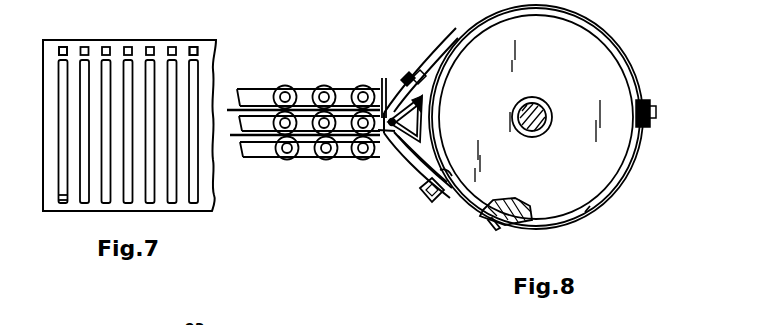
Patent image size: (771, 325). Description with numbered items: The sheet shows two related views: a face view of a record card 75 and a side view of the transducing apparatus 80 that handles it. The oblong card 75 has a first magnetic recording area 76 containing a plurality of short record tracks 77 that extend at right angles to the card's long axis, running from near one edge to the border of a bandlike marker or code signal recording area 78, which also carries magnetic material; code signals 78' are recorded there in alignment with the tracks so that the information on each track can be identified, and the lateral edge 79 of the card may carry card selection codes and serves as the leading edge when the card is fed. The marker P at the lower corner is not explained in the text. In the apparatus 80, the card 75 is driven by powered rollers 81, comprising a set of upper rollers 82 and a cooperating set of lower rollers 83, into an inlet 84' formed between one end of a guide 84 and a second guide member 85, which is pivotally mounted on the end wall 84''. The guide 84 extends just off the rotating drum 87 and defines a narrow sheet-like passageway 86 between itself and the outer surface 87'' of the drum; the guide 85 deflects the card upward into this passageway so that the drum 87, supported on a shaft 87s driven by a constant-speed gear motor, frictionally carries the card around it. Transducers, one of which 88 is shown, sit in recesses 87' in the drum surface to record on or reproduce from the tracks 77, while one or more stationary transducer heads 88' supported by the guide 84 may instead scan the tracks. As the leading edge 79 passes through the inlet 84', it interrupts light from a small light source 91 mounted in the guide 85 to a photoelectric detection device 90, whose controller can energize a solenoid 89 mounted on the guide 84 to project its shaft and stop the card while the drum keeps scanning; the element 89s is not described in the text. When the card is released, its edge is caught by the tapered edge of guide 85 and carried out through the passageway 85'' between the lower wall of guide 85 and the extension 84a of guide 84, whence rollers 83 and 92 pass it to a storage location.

In FIG. 7, the first magnetic recording area 76 is at (50, 95).
In FIG. 7, the marker or code signal recording area 78 is at (129, 108).
In FIG. 7, the code signals 78' is at (77, 32).
In FIG. 7, the edge of the card 79 is at (173, 39).
In FIG. 7, the pin P is at (62, 191).
In FIG. 7, the record tracks 77 is at (61, 194).
In FIG. 7, the record card 75 is at (210, 212).
In FIG. 8, the record card 75 is at (238, 118).
In FIG. 8, the powered rollers 81 is at (287, 87).
In FIG. 8, the upper rollers 82 is at (280, 132).
In FIG. 8, the lower rollers 83 is at (283, 132).
In FIG. 8, the powered rollers 92 is at (326, 153).
In FIG. 8, the guide 84 is at (423, 106).
In FIG. 8, the inlet 84' is at (369, 112).
In FIG. 8, the end wall 84'' is at (425, 63).
In FIG. 8, the extension of the guide 84a is at (394, 145).
In FIG. 8, the second guide member 85 is at (423, 119).
In FIG. 8, the passageway 85'' is at (372, 155).
In FIG. 8, the photoelectrical detection device 90 is at (406, 76).
In FIG. 8, the light source 91 is at (422, 103).
In FIG. 8, the rotating drum 87 is at (538, 117).
In FIG. 8, the shaft 87s is at (538, 130).
In FIG. 8, the recesses 87' is at (506, 225).
In FIG. 8, the outer surface of the drum 87'' is at (604, 225).
In FIG. 8, the passageway 86 is at (593, 27).
In FIG. 8, the apparatus 80 is at (635, 27).
In FIG. 8, the transducer 88 is at (478, 234).
In FIG. 8, the stationary transducer heads 88' is at (661, 113).
In FIG. 8, the solenoid 89 is at (428, 203).
In FIG. 8, the cutter support 89s is at (443, 172).